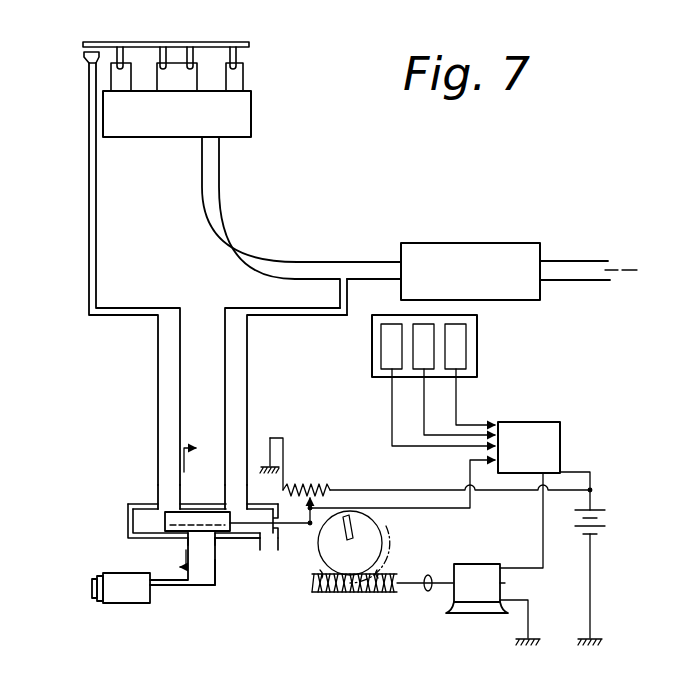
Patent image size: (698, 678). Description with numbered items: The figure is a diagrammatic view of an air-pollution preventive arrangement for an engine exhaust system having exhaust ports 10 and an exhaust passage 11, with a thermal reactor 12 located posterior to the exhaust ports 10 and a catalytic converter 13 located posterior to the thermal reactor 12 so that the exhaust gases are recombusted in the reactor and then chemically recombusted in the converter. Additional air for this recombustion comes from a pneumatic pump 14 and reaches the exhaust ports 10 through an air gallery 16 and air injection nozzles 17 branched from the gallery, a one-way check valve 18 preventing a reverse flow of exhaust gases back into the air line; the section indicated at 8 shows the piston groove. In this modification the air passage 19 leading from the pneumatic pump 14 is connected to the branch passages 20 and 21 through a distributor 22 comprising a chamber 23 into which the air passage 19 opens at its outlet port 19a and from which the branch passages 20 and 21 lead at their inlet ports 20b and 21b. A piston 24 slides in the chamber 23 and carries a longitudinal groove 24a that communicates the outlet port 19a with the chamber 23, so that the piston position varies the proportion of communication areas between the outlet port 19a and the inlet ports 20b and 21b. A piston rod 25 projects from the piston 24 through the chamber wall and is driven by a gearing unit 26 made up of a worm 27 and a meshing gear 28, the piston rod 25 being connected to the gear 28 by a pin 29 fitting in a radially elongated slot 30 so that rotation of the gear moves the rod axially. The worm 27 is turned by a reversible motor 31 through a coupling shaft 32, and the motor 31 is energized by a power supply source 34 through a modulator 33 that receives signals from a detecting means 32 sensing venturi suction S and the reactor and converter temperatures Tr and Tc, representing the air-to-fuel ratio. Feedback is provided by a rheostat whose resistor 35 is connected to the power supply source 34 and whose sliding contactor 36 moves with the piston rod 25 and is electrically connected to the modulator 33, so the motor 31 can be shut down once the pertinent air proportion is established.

The section line 8- 8 is at (189, 499).
The exhaust ports 10 is at (160, 92).
The exhaust passage 11 is at (233, 225).
The thermal reactor 12 is at (157, 138).
The catalytic converter 13 is at (453, 243).
The pneumatic pump 14 is at (108, 580).
The air gallery 16 is at (250, 45).
The air injection nozzles 17 is at (239, 62).
The one-way check valve 18 is at (84, 56).
The air passage 19 is at (172, 586).
The outlet port 19a is at (208, 582).
The branch passage 20 is at (158, 348).
The inlet port 20b is at (170, 507).
The branch passage 21 is at (247, 362).
The inlet port 21b is at (240, 500).
The distributor 22 is at (228, 548).
The chamber 23 is at (130, 505).
The piston 24 is at (198, 517).
The groove 24a is at (183, 537).
The piston rod 25 is at (270, 548).
The gearing unit 26 is at (397, 563).
The worm 27 is at (373, 594).
The gear 28 is at (388, 530).
The pin 29 is at (347, 515).
The radially elongated slot 30 is at (352, 522).
The reversible motor 31 is at (476, 606).
The detecting means 32 is at (483, 352).
The modulator 33 is at (550, 422).
The power supply source 34 is at (607, 514).
The resistor 35 is at (300, 488).
The sliding contactor 36 is at (306, 524).